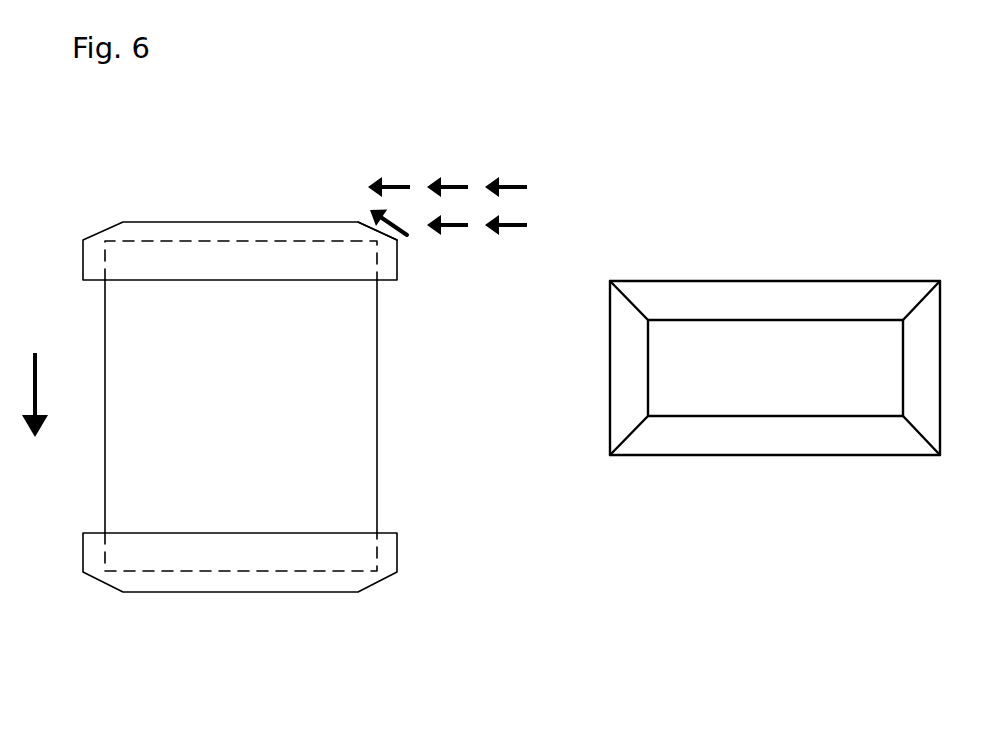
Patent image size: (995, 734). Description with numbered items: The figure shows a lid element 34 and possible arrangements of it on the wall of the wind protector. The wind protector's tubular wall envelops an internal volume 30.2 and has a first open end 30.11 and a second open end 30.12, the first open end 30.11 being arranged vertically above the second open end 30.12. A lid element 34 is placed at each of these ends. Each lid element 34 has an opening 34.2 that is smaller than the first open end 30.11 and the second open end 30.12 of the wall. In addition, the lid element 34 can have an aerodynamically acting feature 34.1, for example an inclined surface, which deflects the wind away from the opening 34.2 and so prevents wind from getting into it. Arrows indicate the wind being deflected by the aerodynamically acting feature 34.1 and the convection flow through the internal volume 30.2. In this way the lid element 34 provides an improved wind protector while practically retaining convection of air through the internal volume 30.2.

The lid element 34 is at (201, 203).
The aerodynamically acting feature 34.1 is at (375, 228).
The opening 34.2 is at (833, 358).
The internal volume 30.2 is at (357, 435).
The first open end 30.11 is at (260, 240).
The second open end 30.12 is at (222, 572).